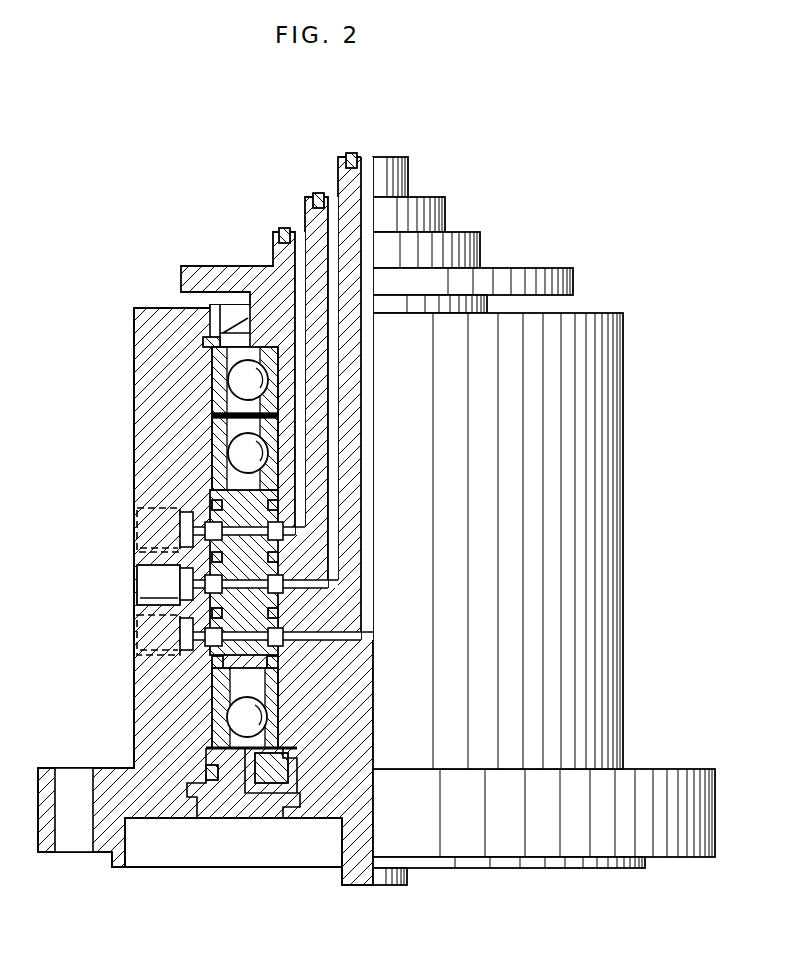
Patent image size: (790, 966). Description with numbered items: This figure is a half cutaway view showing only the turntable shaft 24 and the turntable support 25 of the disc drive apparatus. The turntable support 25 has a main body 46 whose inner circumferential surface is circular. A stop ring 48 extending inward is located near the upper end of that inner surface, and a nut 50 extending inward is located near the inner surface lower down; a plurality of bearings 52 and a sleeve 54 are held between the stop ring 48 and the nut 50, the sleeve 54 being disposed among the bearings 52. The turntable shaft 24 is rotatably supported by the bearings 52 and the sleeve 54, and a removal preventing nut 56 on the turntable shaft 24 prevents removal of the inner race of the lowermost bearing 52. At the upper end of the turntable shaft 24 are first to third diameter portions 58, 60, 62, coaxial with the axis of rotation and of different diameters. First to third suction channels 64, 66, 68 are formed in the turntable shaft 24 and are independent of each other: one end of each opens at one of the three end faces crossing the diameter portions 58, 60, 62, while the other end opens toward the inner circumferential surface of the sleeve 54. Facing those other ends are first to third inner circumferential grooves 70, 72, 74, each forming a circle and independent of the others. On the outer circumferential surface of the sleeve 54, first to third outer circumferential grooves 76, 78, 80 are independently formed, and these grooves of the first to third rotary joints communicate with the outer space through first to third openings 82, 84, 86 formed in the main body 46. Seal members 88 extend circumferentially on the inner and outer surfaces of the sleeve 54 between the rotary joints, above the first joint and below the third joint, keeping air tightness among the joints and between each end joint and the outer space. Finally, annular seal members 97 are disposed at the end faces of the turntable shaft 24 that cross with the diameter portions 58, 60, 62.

The turntable shaft 24 is at (393, 157).
The turntable support 25 is at (622, 560).
The main body 46 is at (152, 383).
The stop ring 48 is at (203, 340).
The nut 50 is at (220, 803).
The bearings 52 is at (212, 452).
The sleeve 54 is at (210, 500).
The removal preventing nut 56 is at (272, 775).
The first diameter portion 58 is at (340, 172).
The second diameter portion 60 is at (308, 212).
The third diameter portion 62 is at (273, 256).
The first suction channel 64 is at (372, 395).
The second suction channel 66 is at (335, 443).
The third suction channel 68 is at (298, 470).
The first inner circumferential groove 70 is at (278, 541).
The second inner circumferential groove 72 is at (281, 593).
The third inner circumferential groove 74 is at (281, 647).
The first outer circumferential groove 76 is at (180, 520).
The second outer circumferential groove 78 is at (180, 580).
The third outer circumferential groove 80 is at (180, 630).
The first opening 82 is at (152, 540).
The second opening 84 is at (146, 590).
The third opening 86 is at (152, 648).
The seal members 88 is at (222, 504).
The annular seal members 97 is at (350, 152).